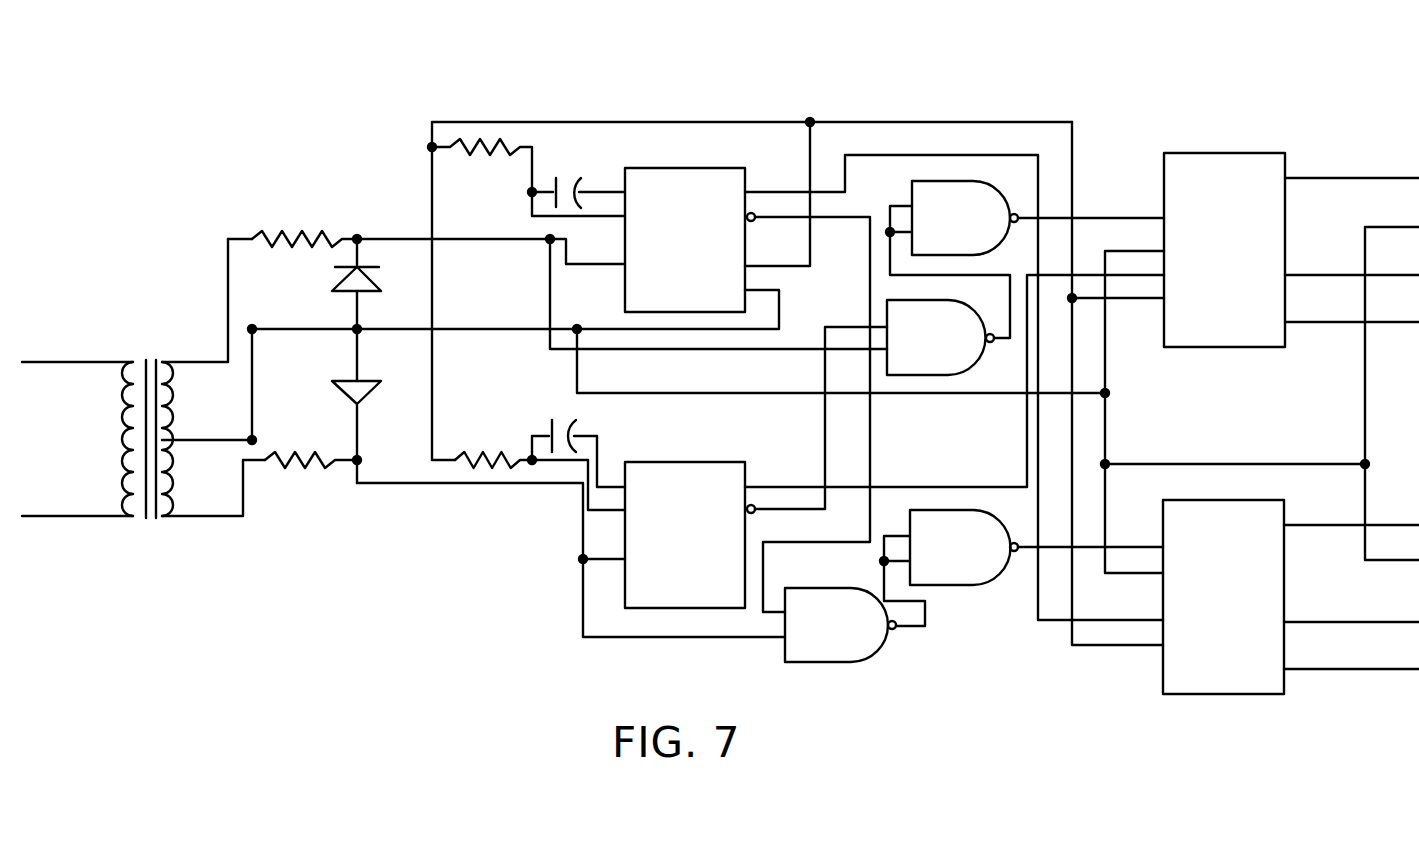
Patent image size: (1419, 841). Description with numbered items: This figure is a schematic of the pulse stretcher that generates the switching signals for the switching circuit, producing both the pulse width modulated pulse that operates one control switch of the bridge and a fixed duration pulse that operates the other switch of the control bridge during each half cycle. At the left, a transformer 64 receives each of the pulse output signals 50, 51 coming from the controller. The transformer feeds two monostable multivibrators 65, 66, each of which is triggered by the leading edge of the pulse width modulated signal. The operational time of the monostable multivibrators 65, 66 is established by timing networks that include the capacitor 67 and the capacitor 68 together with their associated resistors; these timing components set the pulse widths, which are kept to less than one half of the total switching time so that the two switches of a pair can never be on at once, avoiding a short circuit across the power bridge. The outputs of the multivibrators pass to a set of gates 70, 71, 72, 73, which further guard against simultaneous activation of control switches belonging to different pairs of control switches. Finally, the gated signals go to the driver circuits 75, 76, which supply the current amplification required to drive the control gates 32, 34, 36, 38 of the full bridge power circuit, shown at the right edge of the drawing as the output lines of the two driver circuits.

The pulse output signal 50 is at (57, 362).
The pulse output signal 51 is at (55, 516).
The transformer 64 is at (193, 378).
The monostable multivibrator 65 is at (700, 168).
The monostable multivibrator 66 is at (697, 462).
The capacitor 67 is at (750, 277).
The capacitor 68 is at (540, 456).
The gate 70 is at (1010, 190).
The gate 71 is at (960, 367).
The gate 72 is at (998, 532).
The gate 73 is at (855, 663).
The driver circuit 75 is at (1235, 153).
The driver circuit 76 is at (1244, 500).
The control gate 32 is at (1352, 164).
The control gate 34 is at (1352, 285).
The control gate 36 is at (1351, 511).
The control gate 38 is at (1351, 632).